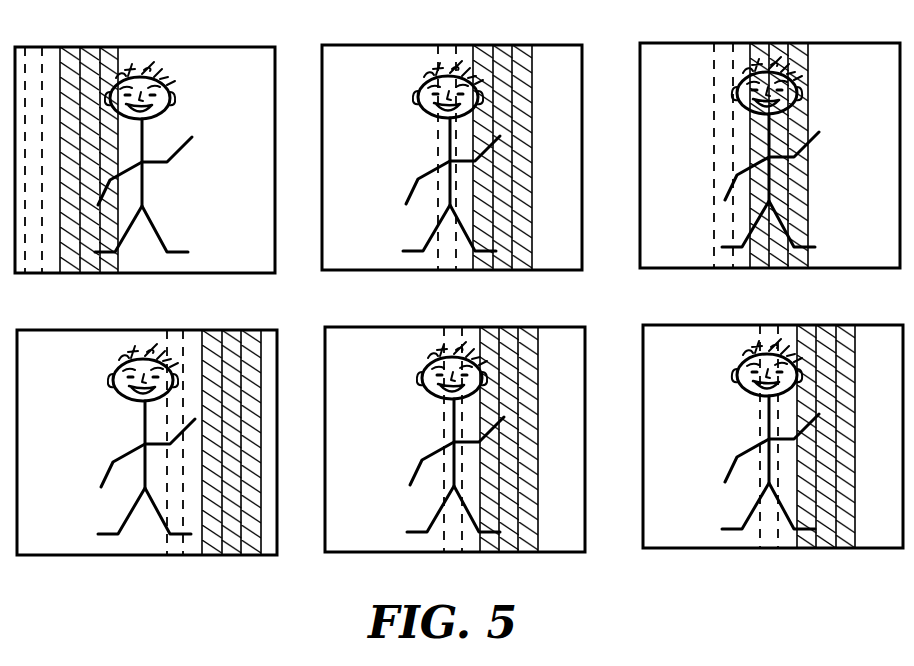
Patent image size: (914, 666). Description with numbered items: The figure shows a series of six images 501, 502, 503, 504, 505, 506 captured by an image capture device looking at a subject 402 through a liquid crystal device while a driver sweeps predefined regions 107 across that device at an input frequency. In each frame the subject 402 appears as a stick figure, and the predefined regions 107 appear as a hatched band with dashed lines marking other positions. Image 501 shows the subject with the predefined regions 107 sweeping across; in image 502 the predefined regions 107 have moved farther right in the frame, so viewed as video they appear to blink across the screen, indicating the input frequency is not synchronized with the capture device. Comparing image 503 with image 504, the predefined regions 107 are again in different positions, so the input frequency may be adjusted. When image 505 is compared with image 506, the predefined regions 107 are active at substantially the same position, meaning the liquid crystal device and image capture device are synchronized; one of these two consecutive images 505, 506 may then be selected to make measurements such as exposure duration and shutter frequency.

The predefined regions 107 is at (118, 58).
The subject 402 is at (142, 175).
The image 501 is at (73, 274).
The image 502 is at (383, 272).
The image 503 is at (690, 270).
The image 504 is at (73, 557).
The image 505 is at (393, 554).
The image 506 is at (698, 550).